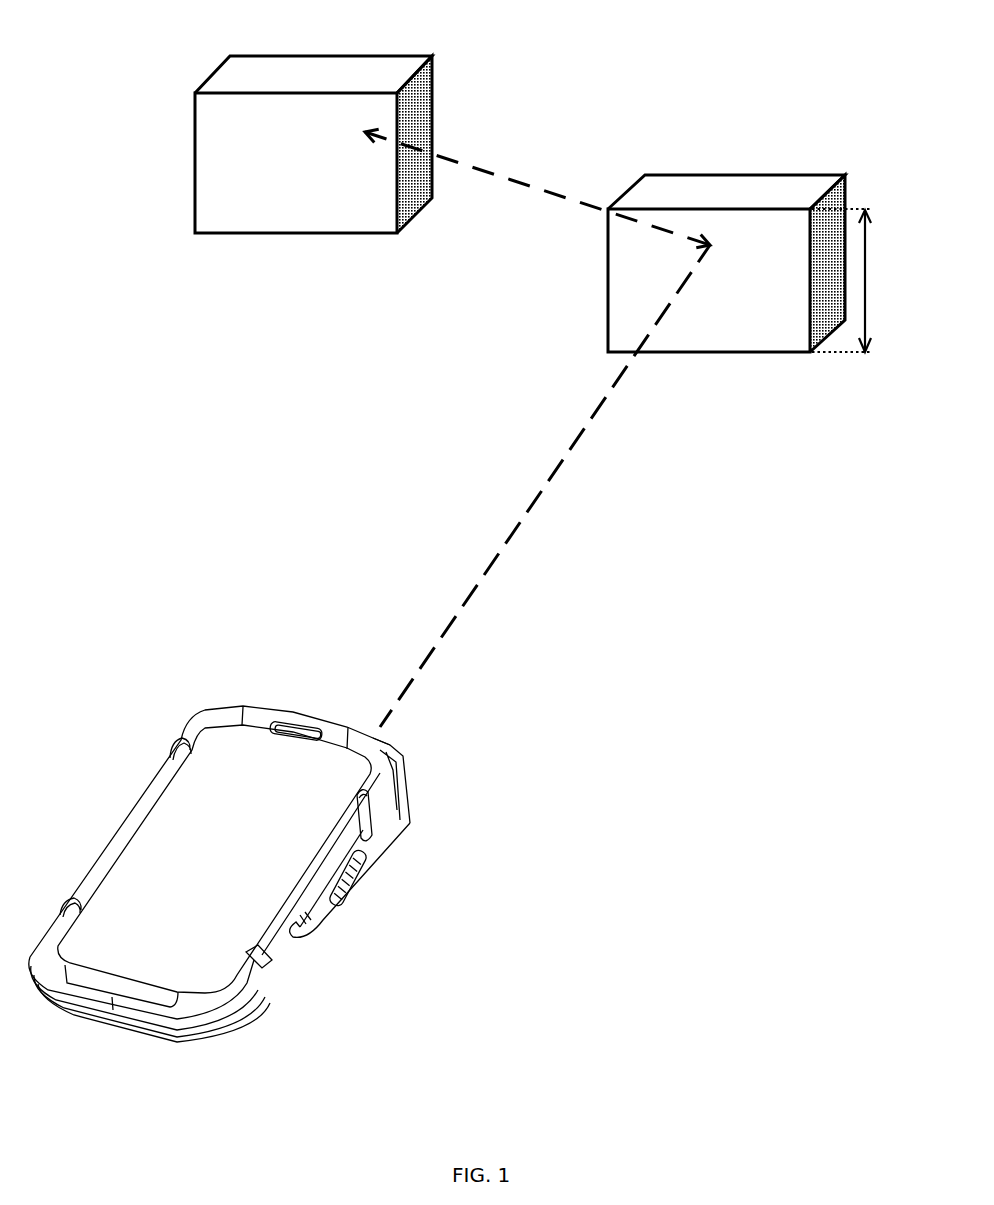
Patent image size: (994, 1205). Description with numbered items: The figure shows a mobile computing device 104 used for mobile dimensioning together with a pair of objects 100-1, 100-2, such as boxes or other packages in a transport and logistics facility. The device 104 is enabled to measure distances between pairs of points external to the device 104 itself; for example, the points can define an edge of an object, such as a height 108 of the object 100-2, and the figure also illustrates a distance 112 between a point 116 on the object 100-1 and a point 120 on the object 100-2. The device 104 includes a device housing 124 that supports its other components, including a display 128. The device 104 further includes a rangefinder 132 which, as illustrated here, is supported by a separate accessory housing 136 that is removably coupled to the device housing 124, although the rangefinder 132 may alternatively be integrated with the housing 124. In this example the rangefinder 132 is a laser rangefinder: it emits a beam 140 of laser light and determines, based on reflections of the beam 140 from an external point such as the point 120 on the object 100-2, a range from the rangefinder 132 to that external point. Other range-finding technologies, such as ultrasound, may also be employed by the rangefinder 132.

The object 100-1 is at (195, 112).
The object 100-2 is at (743, 175).
The mobile computing device 104 is at (172, 732).
The height 108 is at (862, 280).
The distance 112 is at (537, 188).
The point 116 is at (366, 134).
The point 120 is at (708, 243).
The device housing 124 is at (273, 965).
The display 128 is at (228, 862).
The rangefinder 132 is at (410, 851).
The accessory housing 136 is at (395, 810).
The beam 140 is at (545, 486).